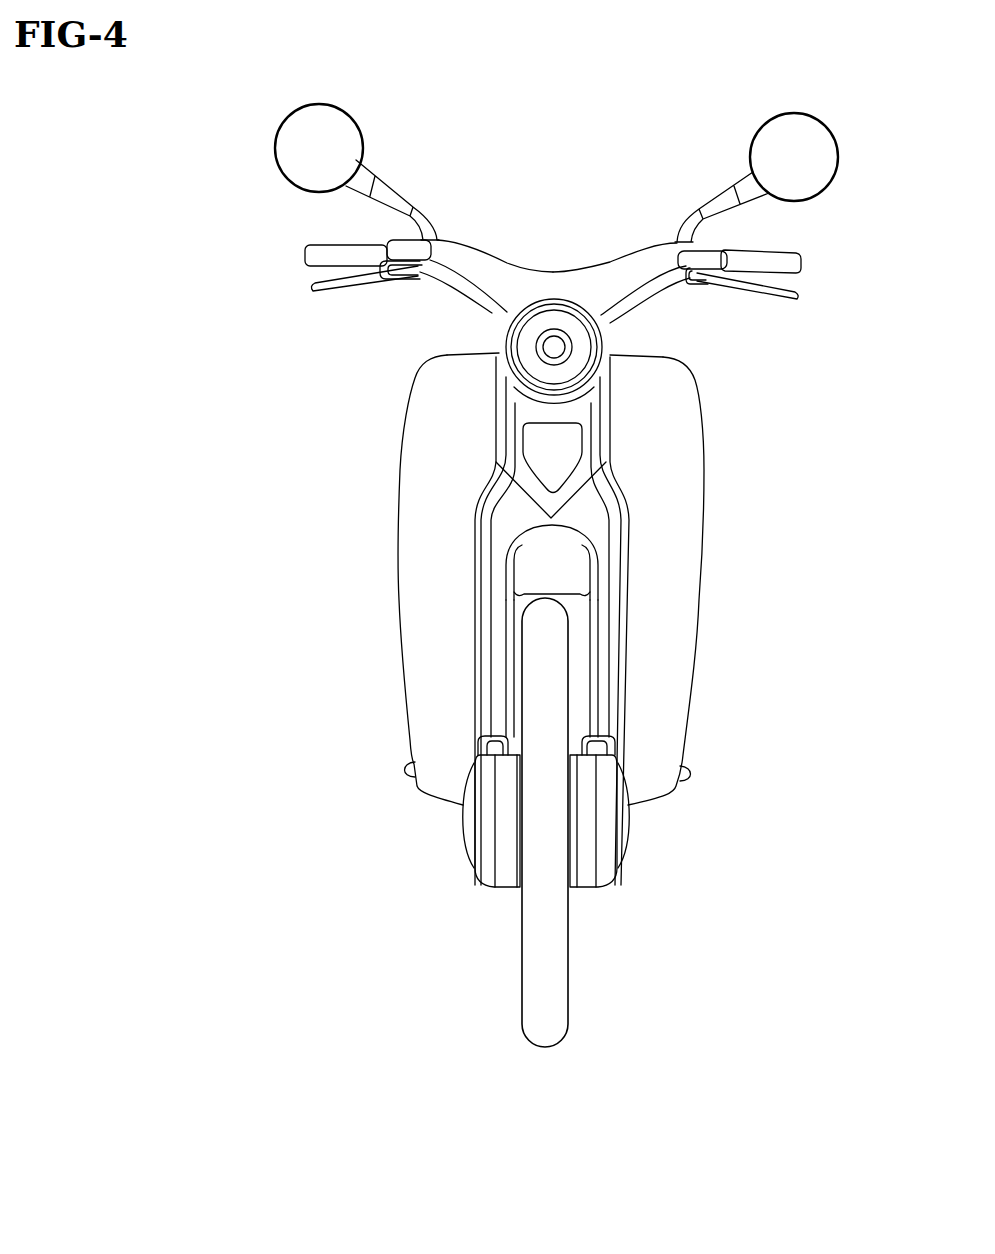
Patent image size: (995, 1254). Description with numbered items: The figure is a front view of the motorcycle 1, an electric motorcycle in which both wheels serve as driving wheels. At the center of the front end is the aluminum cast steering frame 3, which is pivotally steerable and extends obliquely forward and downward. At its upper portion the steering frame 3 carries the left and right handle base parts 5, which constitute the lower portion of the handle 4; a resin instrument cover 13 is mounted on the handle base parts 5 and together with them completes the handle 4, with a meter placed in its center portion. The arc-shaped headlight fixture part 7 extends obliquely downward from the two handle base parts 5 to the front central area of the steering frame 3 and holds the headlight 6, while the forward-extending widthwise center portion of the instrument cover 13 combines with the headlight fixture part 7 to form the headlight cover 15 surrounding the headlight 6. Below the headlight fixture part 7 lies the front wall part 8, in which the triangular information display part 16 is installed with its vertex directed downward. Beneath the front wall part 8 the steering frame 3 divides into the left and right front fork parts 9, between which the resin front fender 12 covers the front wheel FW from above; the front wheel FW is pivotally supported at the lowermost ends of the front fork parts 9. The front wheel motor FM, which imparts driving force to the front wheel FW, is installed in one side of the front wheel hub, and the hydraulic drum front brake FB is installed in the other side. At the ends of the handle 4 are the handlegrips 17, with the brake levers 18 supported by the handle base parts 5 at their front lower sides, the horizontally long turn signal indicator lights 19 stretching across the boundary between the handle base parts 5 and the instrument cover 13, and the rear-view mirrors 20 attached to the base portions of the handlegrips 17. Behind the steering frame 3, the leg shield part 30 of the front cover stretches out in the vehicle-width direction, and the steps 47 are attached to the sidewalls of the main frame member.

The motorcycle 1 is at (552, 136).
The steering frame 3 is at (608, 405).
The handle 4 is at (635, 247).
The handle base part 5 is at (457, 273).
The headlight 6 is at (552, 322).
The headlight fixture part 7 is at (507, 325).
The front wall part 8 is at (550, 417).
The front fork part 9 is at (493, 673).
The front fender 12 is at (543, 540).
The instrument cover 13 is at (492, 262).
The headlight cover 15 is at (573, 298).
The information display part 16 is at (570, 457).
The handlegrip 17 is at (313, 254).
The brake lever 18 is at (312, 291).
The turn signal indicator light 19 is at (403, 250).
The rear-view mirror 20 is at (292, 133).
The leg shield part 30 is at (678, 605).
The step 47 is at (403, 770).
The front brake FB is at (483, 828).
The front wheel motor FM is at (610, 830).
The front wheel FW is at (560, 960).